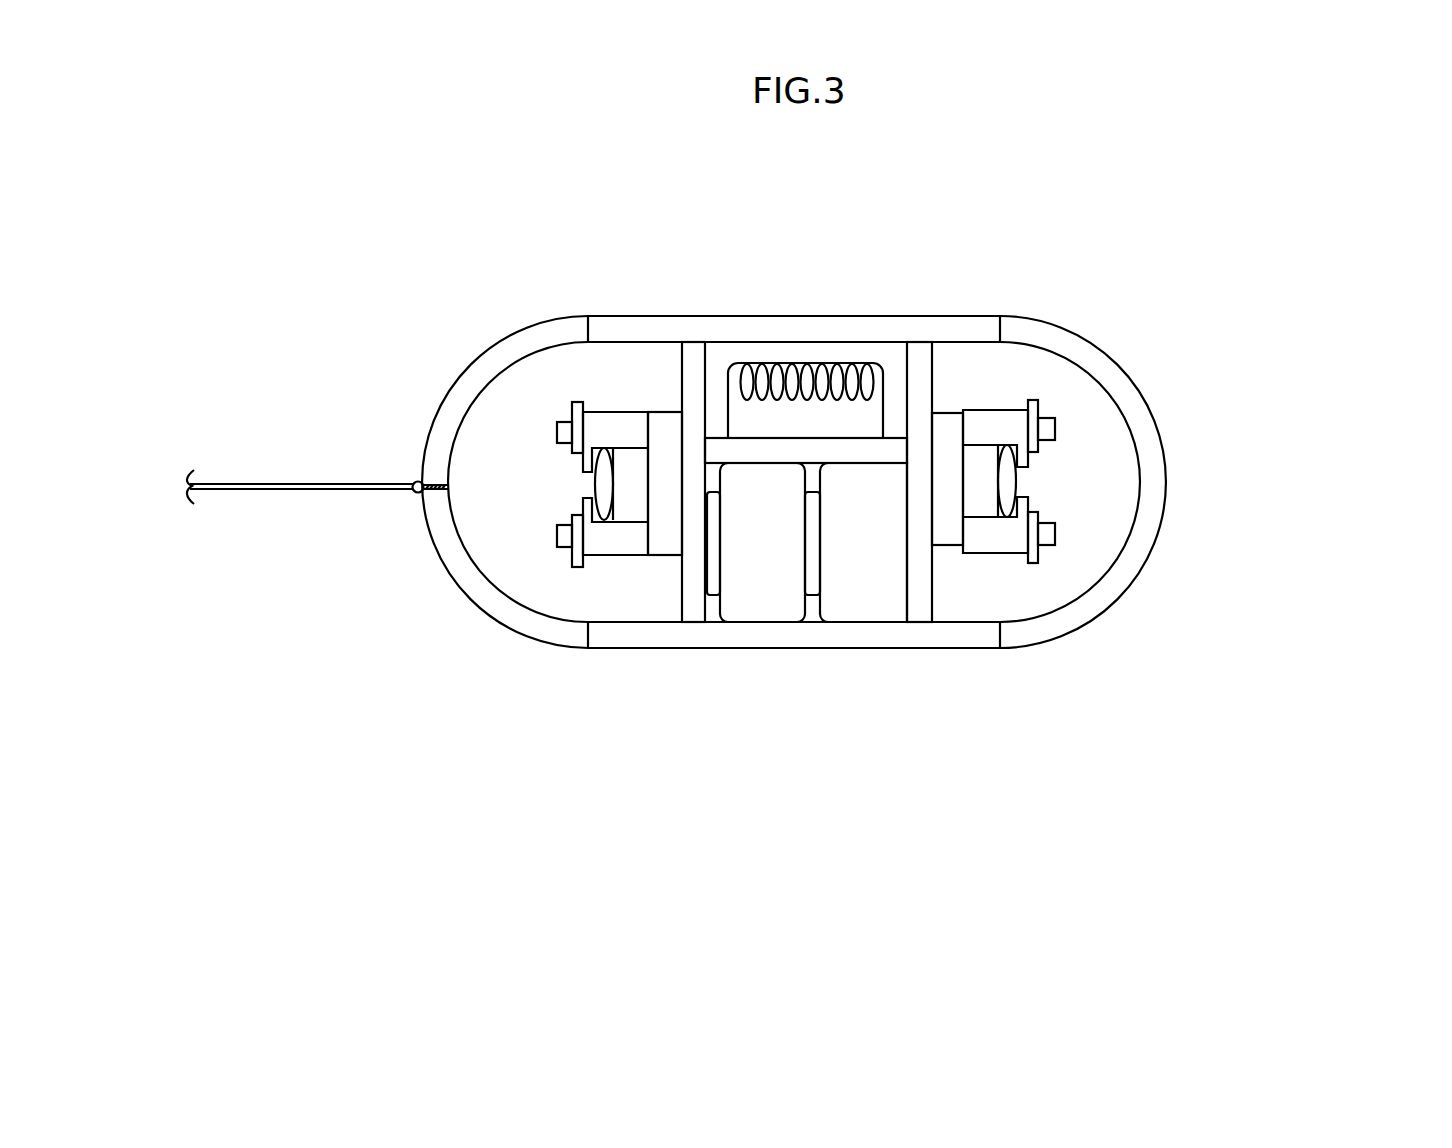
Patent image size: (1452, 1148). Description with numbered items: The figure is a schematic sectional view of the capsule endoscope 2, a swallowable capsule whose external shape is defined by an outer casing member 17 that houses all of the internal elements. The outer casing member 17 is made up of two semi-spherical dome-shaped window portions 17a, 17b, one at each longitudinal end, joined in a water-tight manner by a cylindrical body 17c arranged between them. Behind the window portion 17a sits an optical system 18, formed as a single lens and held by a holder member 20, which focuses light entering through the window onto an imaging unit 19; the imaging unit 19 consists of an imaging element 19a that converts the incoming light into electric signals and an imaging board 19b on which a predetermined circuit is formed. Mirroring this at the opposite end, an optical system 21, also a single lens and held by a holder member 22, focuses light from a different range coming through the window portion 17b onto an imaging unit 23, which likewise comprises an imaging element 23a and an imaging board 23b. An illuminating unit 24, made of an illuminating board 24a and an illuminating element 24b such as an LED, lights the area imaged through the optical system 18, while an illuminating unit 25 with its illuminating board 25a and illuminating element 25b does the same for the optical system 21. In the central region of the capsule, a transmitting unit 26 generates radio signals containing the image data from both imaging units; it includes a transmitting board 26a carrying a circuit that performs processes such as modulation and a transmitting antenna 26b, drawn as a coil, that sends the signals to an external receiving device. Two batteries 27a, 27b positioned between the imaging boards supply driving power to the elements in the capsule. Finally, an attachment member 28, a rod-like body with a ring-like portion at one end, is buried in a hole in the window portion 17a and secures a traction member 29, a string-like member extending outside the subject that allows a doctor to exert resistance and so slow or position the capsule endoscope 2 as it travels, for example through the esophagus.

The capsule endoscope 2 is at (794, 505).
The outer casing member 17 is at (845, 440).
The window portion 17a is at (438, 558).
The window portion 17b is at (1160, 437).
The cylindrical body 17c is at (1016, 283).
The optical system 18 is at (603, 485).
The imaging unit 19 is at (804, 577).
The imaging element 19a is at (666, 540).
The imaging board 19b is at (693, 613).
The holder member 20 is at (595, 420).
The optical system 21 is at (1008, 480).
The holder member 22 is at (1017, 540).
The imaging unit 23 is at (1114, 552).
The imaging element 23a is at (950, 538).
The imaging board 23b is at (918, 610).
The illuminating unit 24 is at (383, 535).
The illuminating board 24a is at (573, 401).
The illuminating element 24b is at (558, 420).
The illuminating unit 25 is at (1216, 443).
The illuminating board 25a is at (1033, 400).
The illuminating element 25b is at (1057, 430).
The transmitting unit 26 is at (876, 301).
The transmitting board 26a is at (717, 445).
The transmitting antenna 26b is at (805, 320).
The battery 27a is at (863, 613).
The battery 27b is at (745, 613).
The attachment member 28 is at (413, 492).
The traction member 29 is at (275, 484).